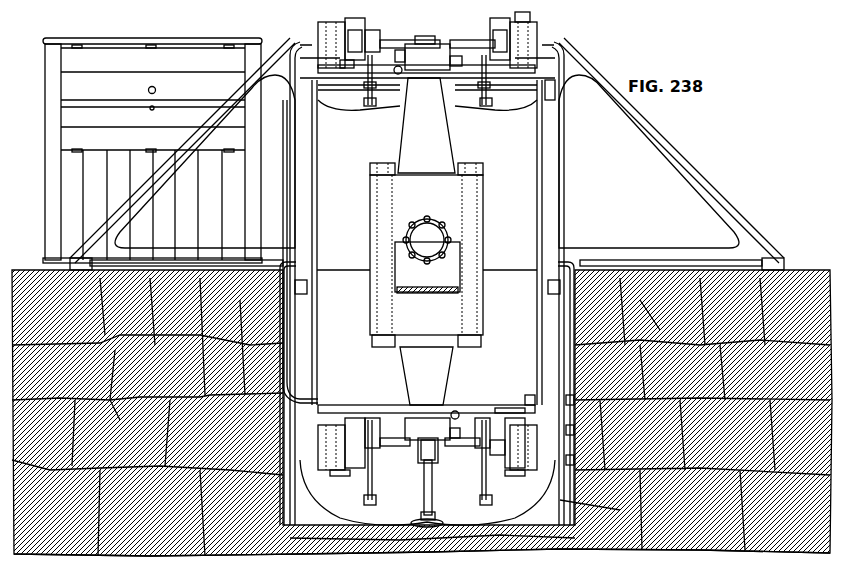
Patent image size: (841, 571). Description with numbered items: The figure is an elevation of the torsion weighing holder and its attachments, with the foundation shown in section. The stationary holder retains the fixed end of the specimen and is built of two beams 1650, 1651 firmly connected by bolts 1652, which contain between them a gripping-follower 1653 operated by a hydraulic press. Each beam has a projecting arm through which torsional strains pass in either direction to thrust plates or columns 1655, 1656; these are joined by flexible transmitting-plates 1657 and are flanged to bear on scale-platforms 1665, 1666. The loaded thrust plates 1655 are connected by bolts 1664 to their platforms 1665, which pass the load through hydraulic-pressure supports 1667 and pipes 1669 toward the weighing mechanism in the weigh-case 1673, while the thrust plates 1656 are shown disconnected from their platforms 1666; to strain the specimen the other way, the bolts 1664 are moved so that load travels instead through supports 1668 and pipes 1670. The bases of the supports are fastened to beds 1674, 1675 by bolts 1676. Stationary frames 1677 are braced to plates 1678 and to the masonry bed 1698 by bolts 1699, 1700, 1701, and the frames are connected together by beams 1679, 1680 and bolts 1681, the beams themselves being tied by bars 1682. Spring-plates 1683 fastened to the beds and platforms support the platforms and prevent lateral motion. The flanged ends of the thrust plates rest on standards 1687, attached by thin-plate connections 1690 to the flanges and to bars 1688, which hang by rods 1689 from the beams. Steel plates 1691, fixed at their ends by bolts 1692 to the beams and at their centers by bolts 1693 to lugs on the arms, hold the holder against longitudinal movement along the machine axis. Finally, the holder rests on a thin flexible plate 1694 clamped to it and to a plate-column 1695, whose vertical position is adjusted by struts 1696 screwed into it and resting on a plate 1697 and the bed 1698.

The beam 1650 is at (427, 206).
The beam 1651 is at (426, 354).
The bolts 1652 is at (424, 170).
The gripping-follower 1653 is at (427, 267).
The thrust plates 1655 is at (427, 236).
The thrust plates 1656 is at (435, 236).
The flexible transmitting-plates 1657 is at (419, 244).
The bolts 1664 is at (435, 243).
The scale-platforms 1665 is at (422, 231).
The scale-platforms 1666 is at (433, 230).
The hydraulic-pressure supports 1667 is at (351, 42).
The hydraulic-pressure supports 1668 is at (421, 249).
The pipes 1669 is at (427, 310).
The pipes 1670 is at (318, 251).
The weigh-case 1673 is at (152, 150).
The bed 1674 is at (425, 246).
The bed 1675 is at (423, 246).
The bolts 1676 is at (427, 150).
The stationary frames 1677 is at (427, 283).
The plates 1678 is at (576, 445).
The beam 1679 is at (426, 72).
The beam 1680 is at (510, 405).
The bolts 1681 is at (534, 242).
The bars 1682 is at (439, 242).
The spring-plates 1683 is at (432, 246).
The standards 1687 is at (446, 274).
The bars 1688 is at (426, 304).
The rods 1689 is at (427, 247).
The thin-plate connections 1690 is at (427, 276).
The steel plates 1691 is at (424, 243).
The bolts 1692 is at (427, 242).
The bolts 1693 is at (464, 62).
The flexible plate 1694 is at (439, 452).
The plate-column 1695 is at (422, 515).
The struts 1696 is at (441, 511).
The plate 1697 is at (421, 527).
The masonry bed 1698 is at (422, 413).
The bolts 1699 is at (385, 405).
The bolts 1700 is at (427, 393).
The bolts 1701 is at (440, 327).